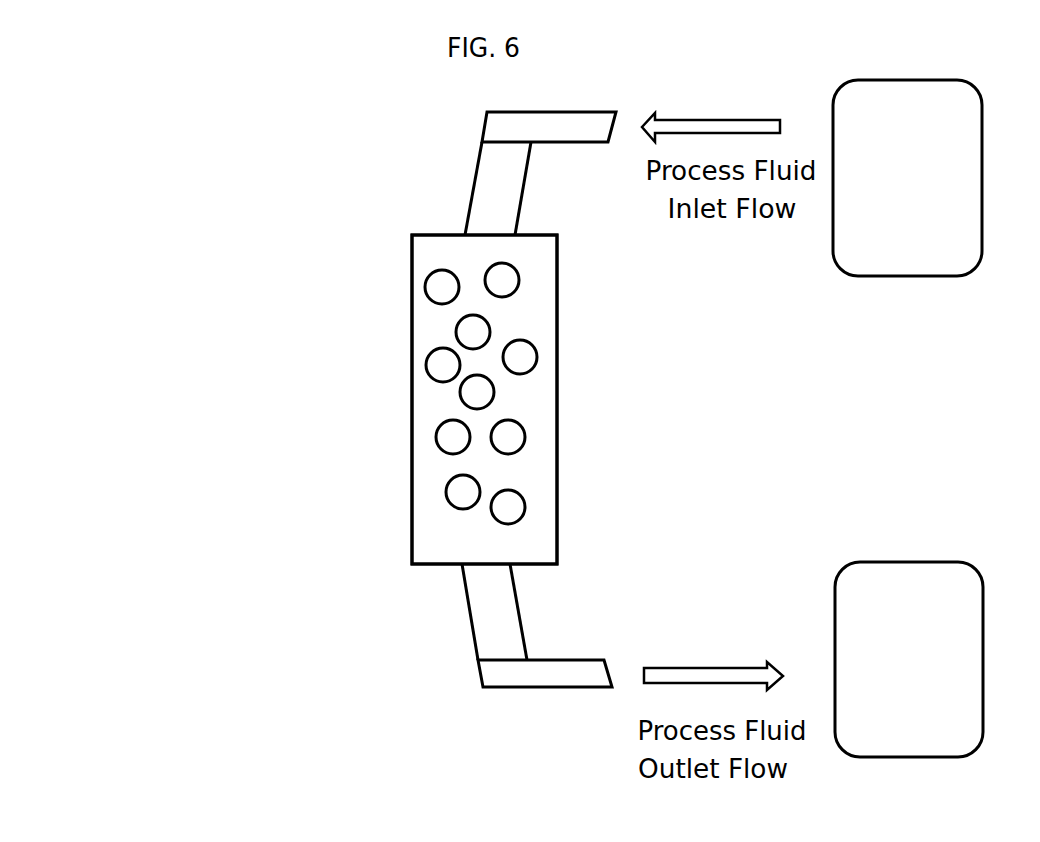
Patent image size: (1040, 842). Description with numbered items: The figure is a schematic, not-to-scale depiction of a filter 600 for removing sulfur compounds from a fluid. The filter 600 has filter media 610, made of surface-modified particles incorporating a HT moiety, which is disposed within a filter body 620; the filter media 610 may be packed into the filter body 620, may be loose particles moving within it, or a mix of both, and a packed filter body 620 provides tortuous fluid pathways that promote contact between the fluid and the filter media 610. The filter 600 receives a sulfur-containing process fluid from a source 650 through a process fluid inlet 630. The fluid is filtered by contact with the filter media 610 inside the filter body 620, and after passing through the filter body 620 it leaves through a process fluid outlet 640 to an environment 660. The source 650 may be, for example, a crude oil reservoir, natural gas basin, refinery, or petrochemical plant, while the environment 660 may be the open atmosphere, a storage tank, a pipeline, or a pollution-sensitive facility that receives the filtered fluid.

The filter 600 is at (330, 201).
The filter media 610 is at (426, 321).
The filter body 620 is at (557, 368).
The process fluid inlet 630 is at (472, 177).
The process fluid outlet 640 is at (463, 605).
The source 650 is at (907, 178).
The environment 660 is at (909, 659).